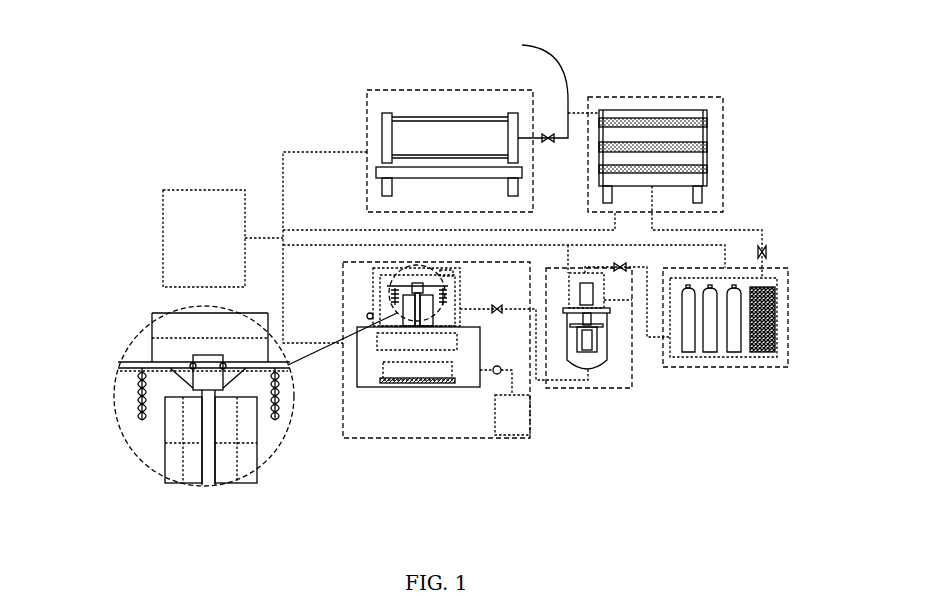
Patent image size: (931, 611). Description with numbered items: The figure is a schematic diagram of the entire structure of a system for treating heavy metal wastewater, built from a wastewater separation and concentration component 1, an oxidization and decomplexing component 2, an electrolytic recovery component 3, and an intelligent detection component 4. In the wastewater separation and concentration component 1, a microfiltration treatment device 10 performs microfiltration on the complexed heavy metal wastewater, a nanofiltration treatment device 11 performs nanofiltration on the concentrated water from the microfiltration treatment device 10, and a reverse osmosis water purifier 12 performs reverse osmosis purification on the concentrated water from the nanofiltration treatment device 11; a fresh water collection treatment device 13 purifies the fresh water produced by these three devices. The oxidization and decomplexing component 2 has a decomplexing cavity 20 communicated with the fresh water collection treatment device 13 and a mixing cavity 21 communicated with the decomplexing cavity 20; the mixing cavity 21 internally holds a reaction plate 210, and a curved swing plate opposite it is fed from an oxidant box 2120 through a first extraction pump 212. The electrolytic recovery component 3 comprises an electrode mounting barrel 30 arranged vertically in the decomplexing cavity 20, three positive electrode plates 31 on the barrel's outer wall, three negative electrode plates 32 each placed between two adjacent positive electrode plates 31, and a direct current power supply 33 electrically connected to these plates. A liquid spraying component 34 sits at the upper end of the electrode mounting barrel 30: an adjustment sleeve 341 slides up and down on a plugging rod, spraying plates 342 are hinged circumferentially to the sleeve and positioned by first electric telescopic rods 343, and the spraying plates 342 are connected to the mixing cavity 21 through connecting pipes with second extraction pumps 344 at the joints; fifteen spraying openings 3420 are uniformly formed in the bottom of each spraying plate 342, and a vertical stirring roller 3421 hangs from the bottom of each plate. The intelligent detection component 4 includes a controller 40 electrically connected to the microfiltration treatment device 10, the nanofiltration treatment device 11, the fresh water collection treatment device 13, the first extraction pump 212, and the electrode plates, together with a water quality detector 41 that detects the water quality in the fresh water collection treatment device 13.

The wastewater separation and concentration component 1 is at (552, 86).
The microfiltration treatment device 10 is at (382, 113).
The nanofiltration treatment device 11 is at (653, 108).
The reverse osmosis water purifier 12 is at (782, 357).
The fresh water collection treatment device 13 is at (608, 349).
The oxidization and decomplexing component 2 is at (456, 368).
The decomplexing cavity 20 is at (406, 305).
The mixing cavity 21 is at (393, 372).
The reaction plate 210 is at (413, 343).
The first extraction pump 212 is at (495, 374).
The oxidant box 2120 is at (530, 415).
The electrolytic recovery component 3 is at (395, 272).
The electrode mounting barrel 30 is at (207, 478).
The positive electrode plates 31 is at (177, 462).
The negative electrode plates 32 is at (245, 463).
The direct current power supply 33 is at (455, 273).
The liquid spraying component 34 is at (160, 382).
The adjustment sleeve 341 is at (205, 355).
The spraying plate 342 is at (120, 363).
The first electric telescopic rods 343 is at (191, 364).
The second extraction pumps 344 is at (378, 293).
The spraying openings 3420 is at (125, 371).
The vertical stirring roller 3421 is at (142, 422).
The intelligent detection component 4 is at (174, 220).
The controller 40 is at (167, 200).
The water quality detector 41 is at (614, 306).